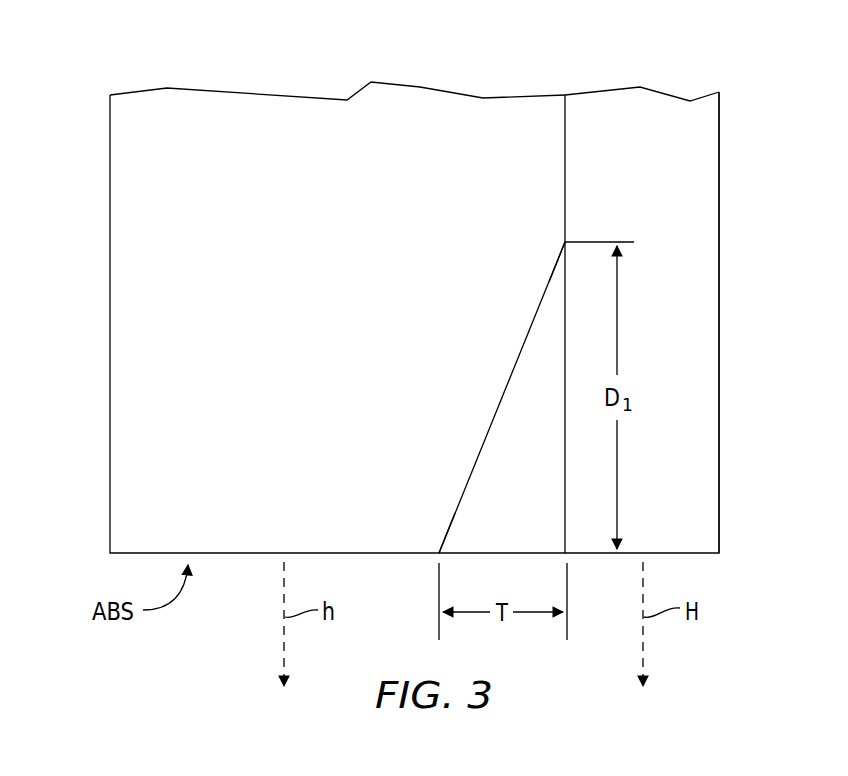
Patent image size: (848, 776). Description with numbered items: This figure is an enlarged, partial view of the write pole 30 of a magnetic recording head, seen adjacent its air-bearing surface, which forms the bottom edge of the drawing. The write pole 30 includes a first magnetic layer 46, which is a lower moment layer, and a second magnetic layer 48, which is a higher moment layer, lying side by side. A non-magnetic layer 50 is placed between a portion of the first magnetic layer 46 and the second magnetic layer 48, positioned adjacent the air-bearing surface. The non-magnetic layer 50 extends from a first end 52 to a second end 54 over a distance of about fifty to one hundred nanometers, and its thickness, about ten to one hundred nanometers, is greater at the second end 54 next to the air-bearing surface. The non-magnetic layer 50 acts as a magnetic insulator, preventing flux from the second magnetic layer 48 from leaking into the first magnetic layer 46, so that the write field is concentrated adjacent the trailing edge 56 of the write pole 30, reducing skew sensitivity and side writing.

The write pole 30 is at (104, 226).
The first magnetic layer 46 is at (421, 110).
The second magnetic layer 48 is at (643, 130).
The non-magnetic layer 50 is at (510, 430).
The first end 52 is at (552, 303).
The second end 54 is at (466, 535).
The trailing edge 56 is at (720, 458).